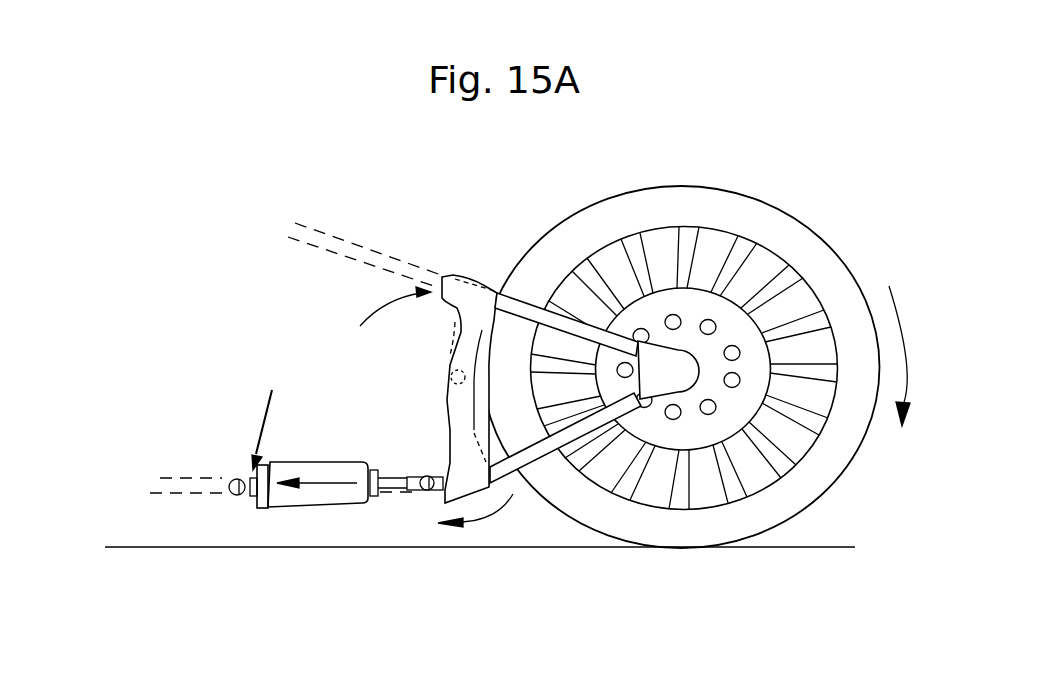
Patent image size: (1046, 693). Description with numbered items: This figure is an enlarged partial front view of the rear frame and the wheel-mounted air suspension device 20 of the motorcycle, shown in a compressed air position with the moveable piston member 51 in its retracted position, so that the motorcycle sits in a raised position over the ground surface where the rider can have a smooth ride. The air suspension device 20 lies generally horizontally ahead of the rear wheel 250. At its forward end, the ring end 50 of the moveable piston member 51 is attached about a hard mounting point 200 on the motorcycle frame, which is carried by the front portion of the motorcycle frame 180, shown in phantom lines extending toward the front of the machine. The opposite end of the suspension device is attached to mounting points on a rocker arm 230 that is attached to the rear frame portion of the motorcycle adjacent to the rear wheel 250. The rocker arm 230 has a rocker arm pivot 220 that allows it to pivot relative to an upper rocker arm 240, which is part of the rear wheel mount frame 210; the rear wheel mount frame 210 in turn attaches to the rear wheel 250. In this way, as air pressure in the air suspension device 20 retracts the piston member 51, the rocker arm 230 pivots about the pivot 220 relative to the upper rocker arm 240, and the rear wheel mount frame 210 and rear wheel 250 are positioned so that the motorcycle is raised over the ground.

The air suspension device 20 is at (317, 502).
The ring end 50 is at (250, 478).
The moveable piston member 51 is at (267, 417).
The motorcycle frame 180 is at (323, 243).
The hard mounting point 200 is at (247, 477).
The rear wheel mount frame 210 is at (527, 450).
The rocker arm pivot 220 is at (448, 380).
The rocker arm 230 is at (423, 480).
The upper rocker arm 240 is at (466, 291).
The rear wheel 250 is at (770, 218).